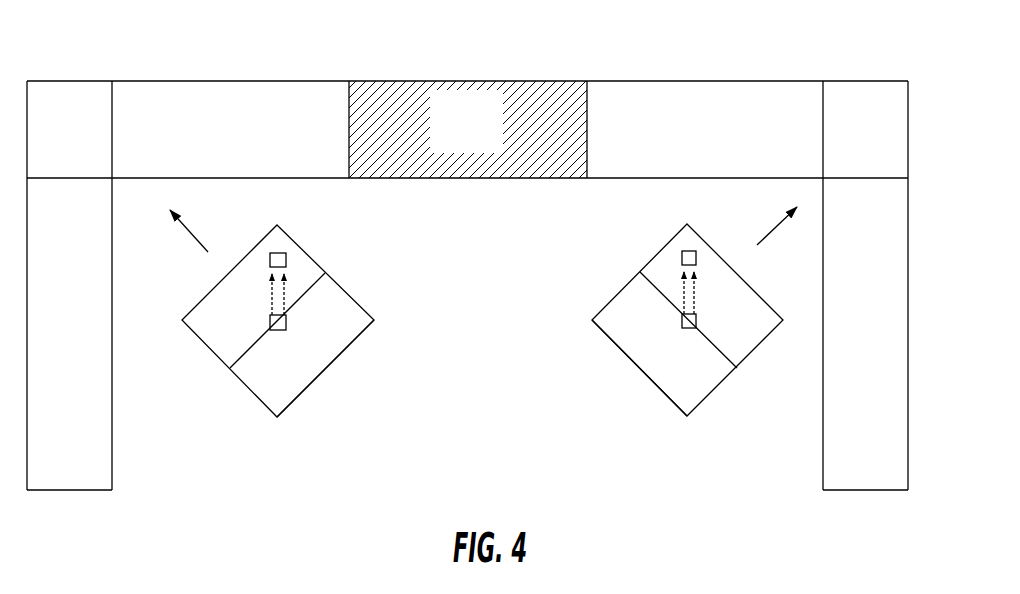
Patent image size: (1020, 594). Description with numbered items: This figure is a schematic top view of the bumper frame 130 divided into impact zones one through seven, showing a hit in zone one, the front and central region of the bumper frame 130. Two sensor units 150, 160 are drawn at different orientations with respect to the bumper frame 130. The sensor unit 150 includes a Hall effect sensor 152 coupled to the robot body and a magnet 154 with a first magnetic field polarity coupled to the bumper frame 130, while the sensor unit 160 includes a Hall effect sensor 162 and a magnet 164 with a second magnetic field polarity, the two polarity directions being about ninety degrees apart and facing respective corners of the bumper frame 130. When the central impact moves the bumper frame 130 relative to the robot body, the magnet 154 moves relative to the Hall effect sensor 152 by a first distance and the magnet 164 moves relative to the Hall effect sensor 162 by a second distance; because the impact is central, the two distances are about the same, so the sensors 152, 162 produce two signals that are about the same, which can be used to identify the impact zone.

The bumper frame 130 is at (823, 222).
The sensor unit 150 is at (289, 309).
The Hall effect sensor 152 is at (273, 330).
The magnet 154 is at (357, 340).
The sensor unit 160 is at (666, 320).
The Hall effect sensor 162 is at (697, 321).
The magnet 164 is at (667, 397).